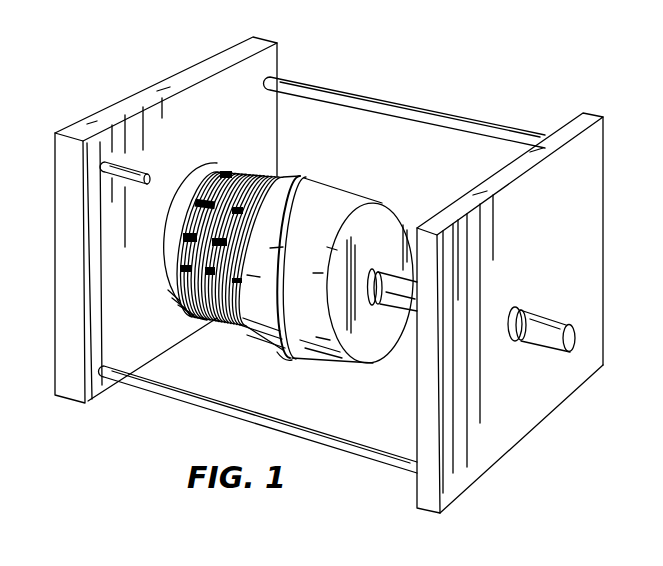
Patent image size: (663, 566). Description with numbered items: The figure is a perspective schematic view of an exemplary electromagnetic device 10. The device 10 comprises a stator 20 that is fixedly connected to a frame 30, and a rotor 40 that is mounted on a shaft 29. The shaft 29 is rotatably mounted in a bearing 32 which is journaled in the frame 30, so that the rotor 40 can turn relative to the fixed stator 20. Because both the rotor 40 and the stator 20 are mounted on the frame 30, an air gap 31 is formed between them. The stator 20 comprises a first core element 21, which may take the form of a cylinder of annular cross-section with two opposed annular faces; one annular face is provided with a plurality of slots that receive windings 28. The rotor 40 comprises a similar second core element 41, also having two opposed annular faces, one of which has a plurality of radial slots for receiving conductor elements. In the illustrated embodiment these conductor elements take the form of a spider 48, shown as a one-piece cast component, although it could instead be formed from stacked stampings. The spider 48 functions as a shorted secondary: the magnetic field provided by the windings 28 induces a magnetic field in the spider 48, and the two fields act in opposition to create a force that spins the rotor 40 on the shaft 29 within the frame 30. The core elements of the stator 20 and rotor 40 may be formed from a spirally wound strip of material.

The electromagnetic device 10 is at (353, 77).
The stator 20 is at (208, 239).
The first core element 21 is at (170, 273).
The windings 28 is at (219, 322).
The shaft 29 is at (402, 303).
The frame 30 is at (225, 57).
The air gap 31 is at (284, 256).
The bearing 32 is at (524, 310).
The rotor 40 is at (368, 287).
The second core element 41 is at (321, 338).
The spider 48 is at (277, 353).